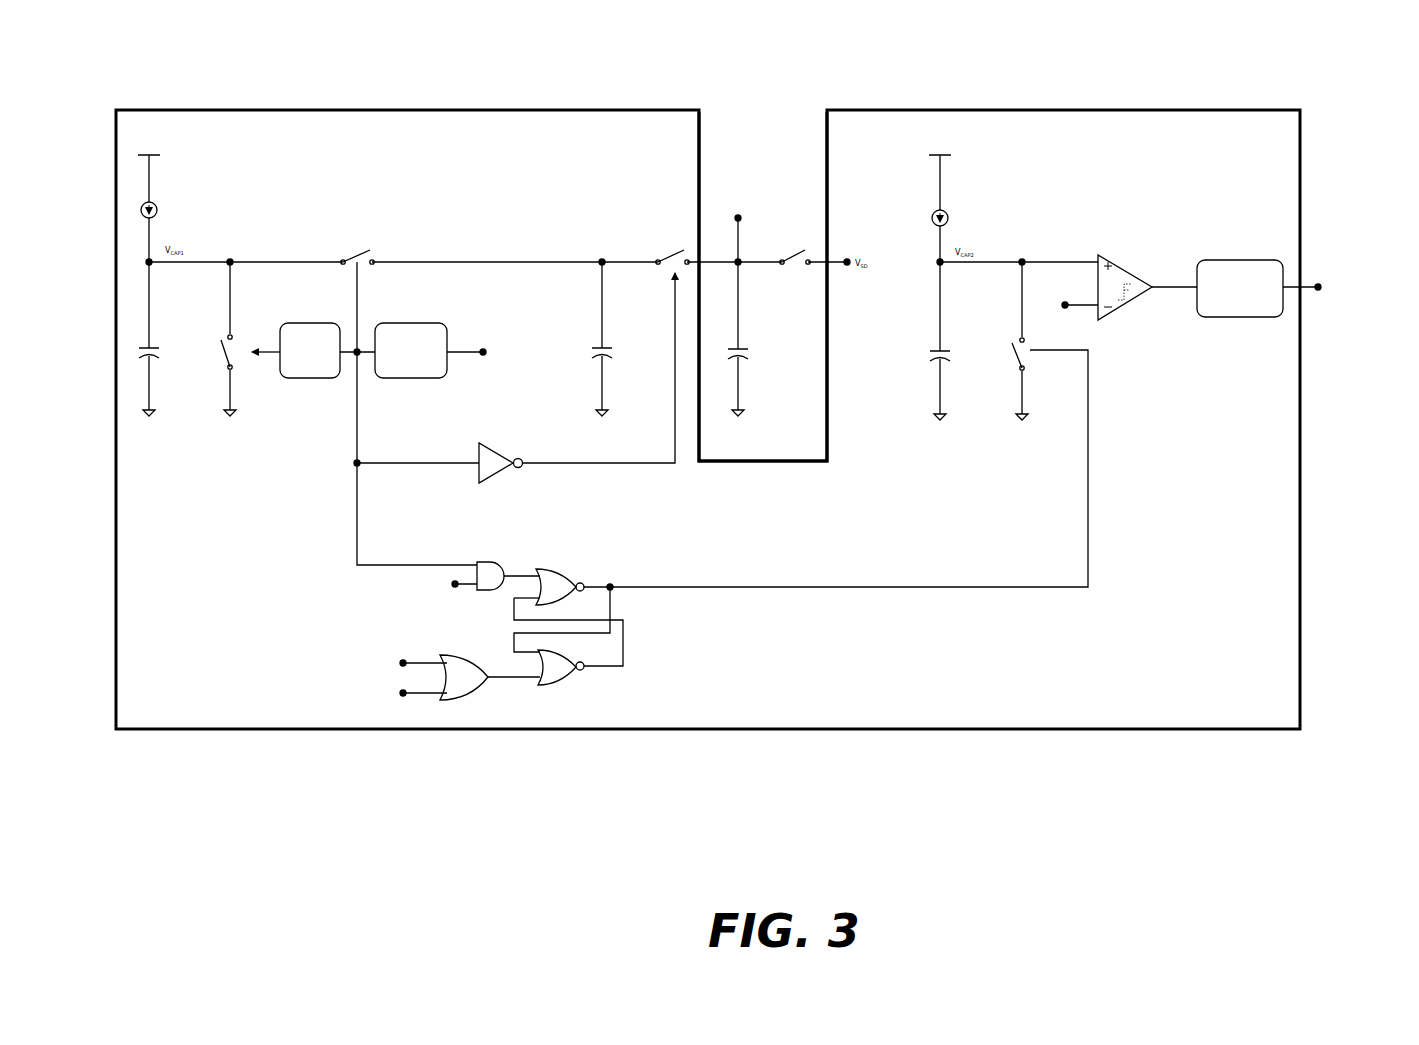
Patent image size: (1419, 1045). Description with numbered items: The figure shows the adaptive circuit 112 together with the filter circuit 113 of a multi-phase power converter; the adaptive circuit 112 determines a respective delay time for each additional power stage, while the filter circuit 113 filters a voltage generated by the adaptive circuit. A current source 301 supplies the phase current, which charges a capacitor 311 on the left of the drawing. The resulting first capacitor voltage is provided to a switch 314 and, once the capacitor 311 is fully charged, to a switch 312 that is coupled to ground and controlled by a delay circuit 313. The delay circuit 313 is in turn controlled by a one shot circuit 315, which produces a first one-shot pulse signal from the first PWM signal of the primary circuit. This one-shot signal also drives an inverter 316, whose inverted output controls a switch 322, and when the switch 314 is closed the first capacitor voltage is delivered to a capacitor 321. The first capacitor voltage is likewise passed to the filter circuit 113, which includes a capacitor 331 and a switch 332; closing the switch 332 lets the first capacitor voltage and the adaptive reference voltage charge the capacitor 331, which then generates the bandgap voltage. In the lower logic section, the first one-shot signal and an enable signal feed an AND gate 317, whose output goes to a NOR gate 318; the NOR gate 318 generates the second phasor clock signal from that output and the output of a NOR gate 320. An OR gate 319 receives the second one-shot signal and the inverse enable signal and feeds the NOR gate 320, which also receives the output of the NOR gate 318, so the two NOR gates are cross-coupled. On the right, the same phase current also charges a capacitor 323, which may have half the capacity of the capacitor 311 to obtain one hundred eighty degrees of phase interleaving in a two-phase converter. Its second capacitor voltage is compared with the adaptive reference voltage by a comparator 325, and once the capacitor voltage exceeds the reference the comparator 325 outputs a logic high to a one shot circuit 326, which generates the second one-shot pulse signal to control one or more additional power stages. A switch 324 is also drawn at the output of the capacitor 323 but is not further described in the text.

The adaptive circuit 112 is at (262, 110).
The filter circuit 113 is at (772, 145).
The current source 301 is at (156, 204).
The capacitor 311 is at (156, 332).
The switch 312 is at (239, 327).
The delay circuit 313 is at (288, 378).
The switch 314 is at (356, 247).
The one shot circuit 315 is at (397, 323).
The inverter 316 is at (488, 442).
The AND gate 317 is at (490, 560).
The NOR gate 318 is at (550, 567).
The OR gate 319 is at (483, 688).
The NOR gate 320 is at (572, 676).
The capacitor 321 is at (606, 343).
The switch 322 is at (673, 246).
The capacitor 323 is at (949, 344).
The switch 324 is at (1027, 352).
The comparator 325 is at (1113, 265).
The one shot circuit 326 is at (1222, 258).
The capacitor 331 is at (743, 343).
The switch 332 is at (800, 247).